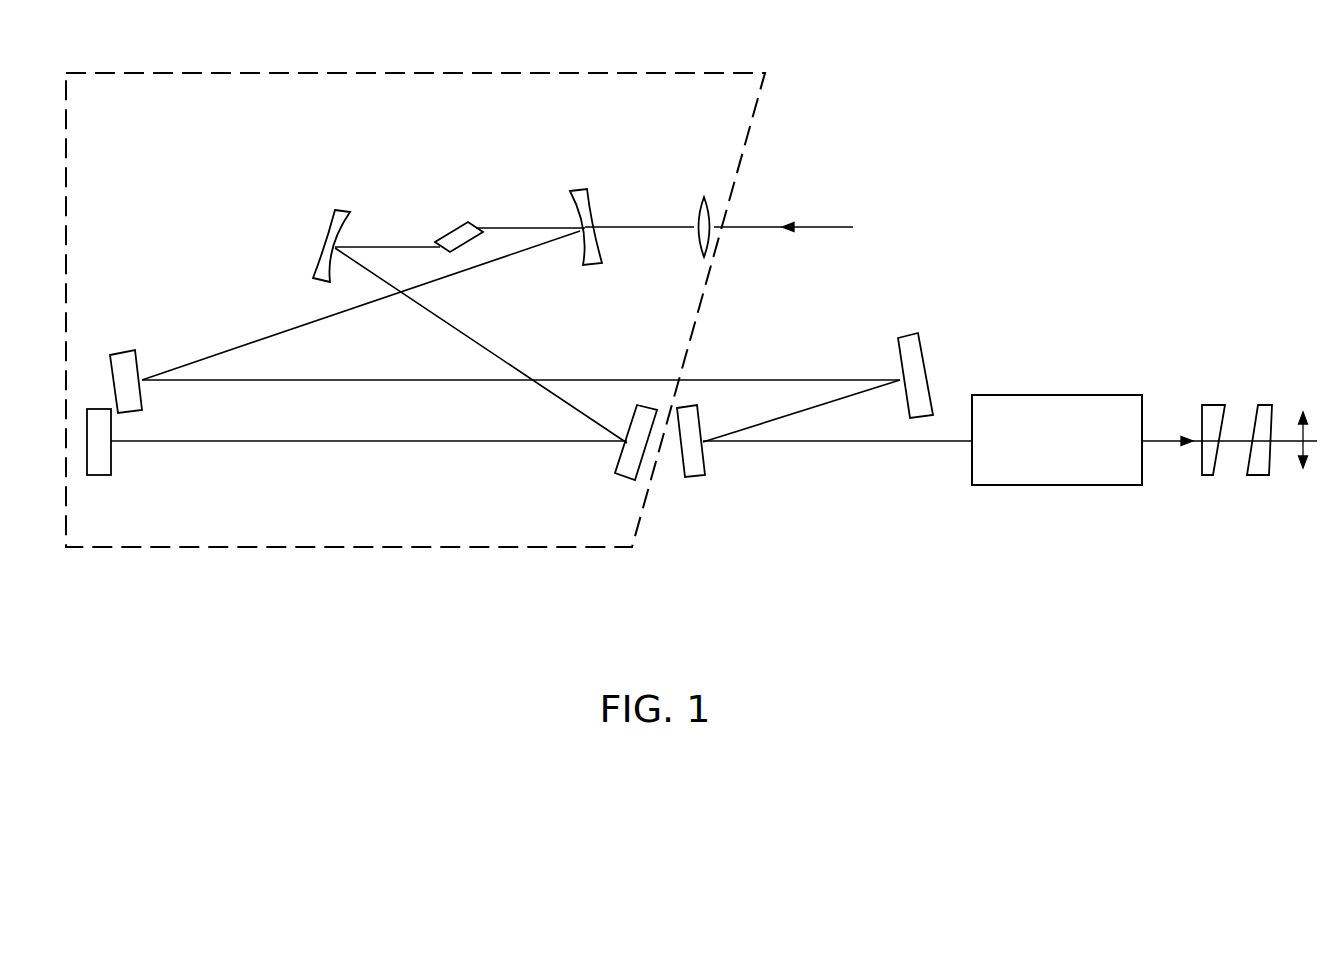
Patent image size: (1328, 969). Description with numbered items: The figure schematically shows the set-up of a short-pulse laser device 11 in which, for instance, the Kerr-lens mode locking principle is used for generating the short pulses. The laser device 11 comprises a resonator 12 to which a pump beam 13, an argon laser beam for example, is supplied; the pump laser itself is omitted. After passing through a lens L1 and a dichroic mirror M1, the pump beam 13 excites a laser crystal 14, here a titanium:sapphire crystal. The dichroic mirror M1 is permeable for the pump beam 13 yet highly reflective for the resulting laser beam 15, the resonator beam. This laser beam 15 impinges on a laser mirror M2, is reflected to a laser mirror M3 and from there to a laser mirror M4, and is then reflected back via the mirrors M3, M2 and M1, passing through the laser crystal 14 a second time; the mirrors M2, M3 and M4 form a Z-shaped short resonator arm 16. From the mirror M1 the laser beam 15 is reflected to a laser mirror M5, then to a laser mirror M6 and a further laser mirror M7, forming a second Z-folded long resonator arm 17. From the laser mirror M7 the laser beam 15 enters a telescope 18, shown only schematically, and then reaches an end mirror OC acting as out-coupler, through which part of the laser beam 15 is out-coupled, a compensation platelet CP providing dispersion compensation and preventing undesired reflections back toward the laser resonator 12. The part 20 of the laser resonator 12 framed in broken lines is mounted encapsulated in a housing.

The short-pulse laser device 11 is at (886, 135).
The resonator 12 is at (688, 540).
The pump beam 13 is at (813, 226).
The laser crystal 14 is at (463, 233).
The laser beam 15 is at (498, 353).
The short resonator arm 16 is at (406, 456).
The long resonator arm 17 is at (867, 459).
The telescope 18 is at (1016, 393).
The resonator part 20 is at (282, 547).
The dichroic mirror M1 is at (590, 203).
The laser mirror M2 is at (330, 238).
The laser mirror M3 is at (637, 450).
The laser mirror M4 is at (102, 462).
The laser mirror M5 is at (122, 375).
The laser mirror M6 is at (910, 358).
The laser mirror M7 is at (690, 460).
The lens L1 is at (707, 217).
The end mirror OC is at (1213, 402).
The compensation platelet CP is at (1266, 402).